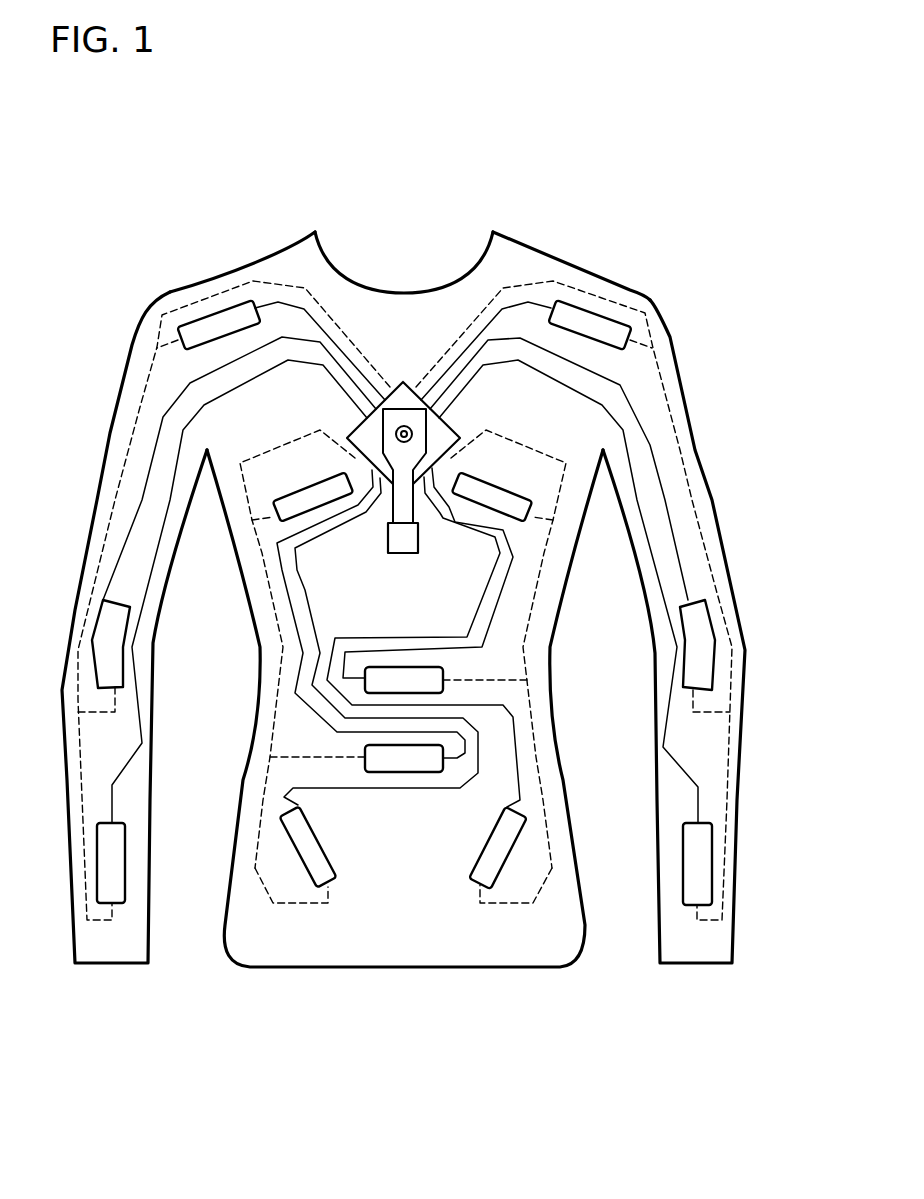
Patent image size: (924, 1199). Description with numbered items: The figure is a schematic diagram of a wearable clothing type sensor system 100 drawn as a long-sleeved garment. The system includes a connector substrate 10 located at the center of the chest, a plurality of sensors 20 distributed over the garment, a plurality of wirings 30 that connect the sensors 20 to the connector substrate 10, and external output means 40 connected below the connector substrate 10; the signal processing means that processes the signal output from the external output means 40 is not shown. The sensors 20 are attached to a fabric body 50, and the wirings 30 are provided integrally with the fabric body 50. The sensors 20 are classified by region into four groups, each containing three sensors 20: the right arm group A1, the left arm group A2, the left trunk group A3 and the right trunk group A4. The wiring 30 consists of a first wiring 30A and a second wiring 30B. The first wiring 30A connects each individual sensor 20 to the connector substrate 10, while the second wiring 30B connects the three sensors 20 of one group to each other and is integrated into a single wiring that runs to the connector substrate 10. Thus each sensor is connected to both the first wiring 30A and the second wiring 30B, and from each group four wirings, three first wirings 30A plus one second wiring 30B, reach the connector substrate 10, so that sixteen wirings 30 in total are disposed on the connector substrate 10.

The sensor system 100 is at (574, 143).
The connector substrate 10 is at (403, 405).
The sensor 20 is at (580, 322).
The wiring 30 is at (642, 405).
The first wiring 30A is at (665, 595).
The second wiring 30B is at (718, 597).
The external output means 40 is at (403, 538).
The fabric body 50 is at (537, 673).
The right arm group A1 is at (72, 766).
The left arm group A2 is at (669, 375).
The left trunk group A3 is at (530, 919).
The right trunk group A4 is at (304, 919).